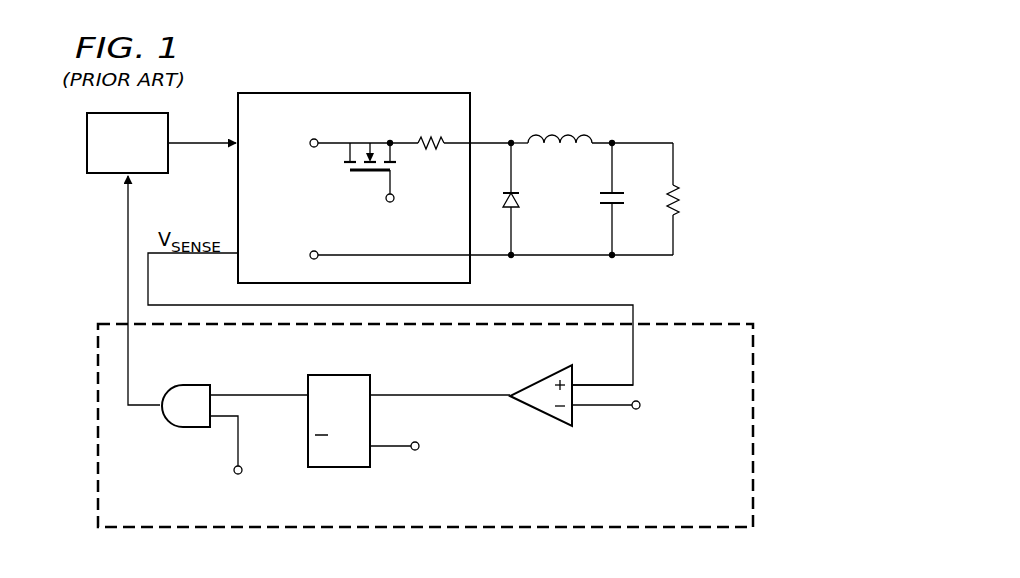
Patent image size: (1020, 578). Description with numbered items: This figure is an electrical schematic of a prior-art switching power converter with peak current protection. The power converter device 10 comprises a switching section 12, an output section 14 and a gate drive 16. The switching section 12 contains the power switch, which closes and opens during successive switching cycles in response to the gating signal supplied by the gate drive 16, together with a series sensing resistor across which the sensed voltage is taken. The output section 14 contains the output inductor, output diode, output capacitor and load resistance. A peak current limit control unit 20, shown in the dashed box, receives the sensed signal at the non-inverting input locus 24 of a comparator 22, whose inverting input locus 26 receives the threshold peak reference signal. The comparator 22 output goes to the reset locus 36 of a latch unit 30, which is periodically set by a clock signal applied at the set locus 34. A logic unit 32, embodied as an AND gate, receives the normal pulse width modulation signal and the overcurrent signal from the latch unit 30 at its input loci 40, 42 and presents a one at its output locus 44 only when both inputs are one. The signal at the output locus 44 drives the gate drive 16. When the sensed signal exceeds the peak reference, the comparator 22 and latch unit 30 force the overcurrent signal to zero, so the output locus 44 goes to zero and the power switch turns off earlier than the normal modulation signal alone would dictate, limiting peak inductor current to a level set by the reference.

The power converter device 10 is at (387, 68).
The switching section 12 is at (327, 91).
The output section 14 is at (609, 90).
The gate drive 16 is at (87, 138).
The peak current limit control unit 20 is at (96, 425).
The comparator 22 is at (537, 413).
The non-inverting input locus 24 is at (594, 385).
The inverting input locus 26 is at (594, 406).
The latch unit 30 is at (340, 468).
The logic unit 32 is at (188, 384).
The set locus 34 is at (385, 448).
The reset locus 36 is at (385, 394).
The input locus 40 is at (237, 446).
The input locus 42 is at (256, 397).
The output locus 44 is at (143, 406).